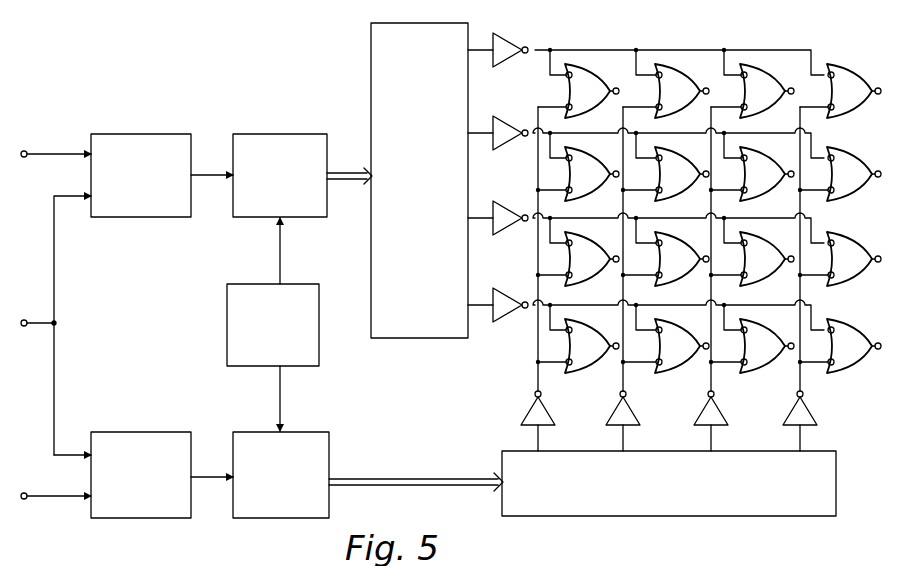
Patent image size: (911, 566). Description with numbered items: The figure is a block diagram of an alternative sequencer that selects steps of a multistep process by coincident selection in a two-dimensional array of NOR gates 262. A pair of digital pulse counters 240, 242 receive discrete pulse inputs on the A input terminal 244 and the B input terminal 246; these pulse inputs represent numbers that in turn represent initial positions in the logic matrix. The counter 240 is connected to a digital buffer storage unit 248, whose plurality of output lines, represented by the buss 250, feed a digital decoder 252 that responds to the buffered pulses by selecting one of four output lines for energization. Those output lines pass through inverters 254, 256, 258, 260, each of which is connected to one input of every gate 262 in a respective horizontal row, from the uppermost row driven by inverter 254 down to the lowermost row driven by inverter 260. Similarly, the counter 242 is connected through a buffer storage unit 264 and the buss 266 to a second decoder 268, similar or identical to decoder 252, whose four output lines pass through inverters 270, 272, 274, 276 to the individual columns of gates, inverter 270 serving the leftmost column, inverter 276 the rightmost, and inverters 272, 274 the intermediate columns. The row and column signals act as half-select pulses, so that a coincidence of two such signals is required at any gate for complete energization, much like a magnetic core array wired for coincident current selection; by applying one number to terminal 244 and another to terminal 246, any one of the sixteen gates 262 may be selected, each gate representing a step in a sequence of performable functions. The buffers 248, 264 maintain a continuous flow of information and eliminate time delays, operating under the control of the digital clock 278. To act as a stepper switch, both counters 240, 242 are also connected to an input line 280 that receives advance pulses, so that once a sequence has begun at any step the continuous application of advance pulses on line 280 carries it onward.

The digital pulse counter 240 is at (130, 208).
The digital pulse counter 242 is at (166, 507).
The A input terminal 244 is at (27, 151).
The B input terminal 246 is at (24, 500).
The digital buffer storage unit 248 is at (267, 143).
The buss 250 is at (350, 208).
The digital decoder 252 is at (385, 43).
The inverter 254 is at (512, 46).
The inverter 256 is at (506, 148).
The inverter 258 is at (501, 230).
The inverter 260 is at (500, 318).
The NOR gates 262 is at (566, 91).
The buffer storage unit 264 is at (318, 444).
The buss 266 is at (423, 456).
The second decoder 268 is at (762, 507).
The inverter 270 is at (522, 412).
The inverter 272 is at (617, 416).
The inverter 274 is at (704, 418).
The inverter 276 is at (794, 418).
The digital clock 278 is at (228, 352).
The input line 280 is at (31, 326).